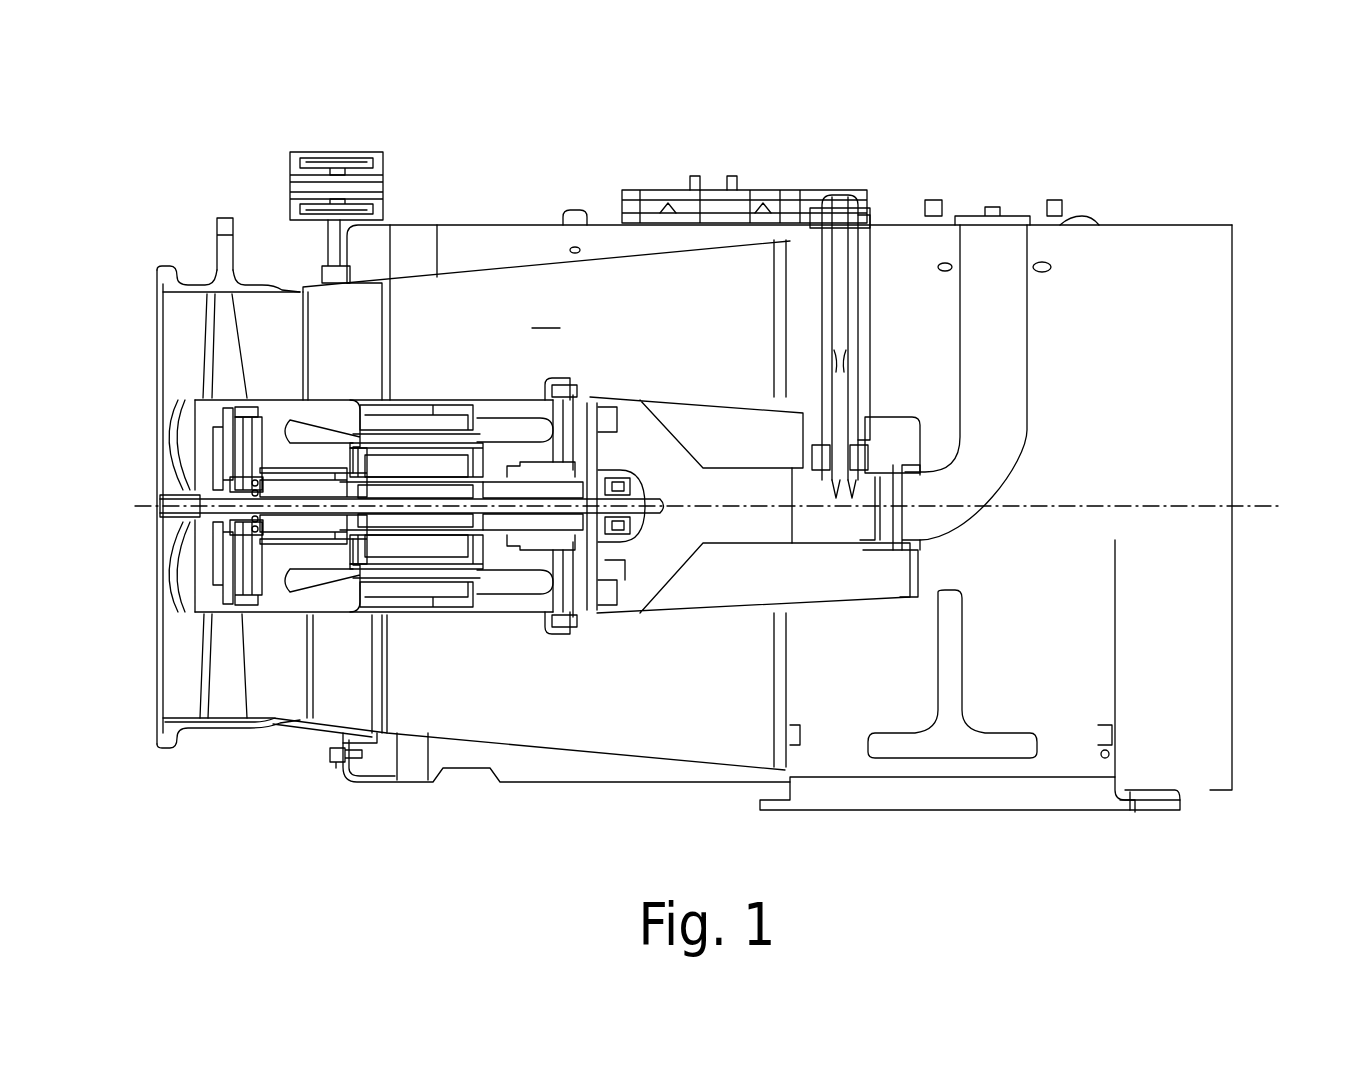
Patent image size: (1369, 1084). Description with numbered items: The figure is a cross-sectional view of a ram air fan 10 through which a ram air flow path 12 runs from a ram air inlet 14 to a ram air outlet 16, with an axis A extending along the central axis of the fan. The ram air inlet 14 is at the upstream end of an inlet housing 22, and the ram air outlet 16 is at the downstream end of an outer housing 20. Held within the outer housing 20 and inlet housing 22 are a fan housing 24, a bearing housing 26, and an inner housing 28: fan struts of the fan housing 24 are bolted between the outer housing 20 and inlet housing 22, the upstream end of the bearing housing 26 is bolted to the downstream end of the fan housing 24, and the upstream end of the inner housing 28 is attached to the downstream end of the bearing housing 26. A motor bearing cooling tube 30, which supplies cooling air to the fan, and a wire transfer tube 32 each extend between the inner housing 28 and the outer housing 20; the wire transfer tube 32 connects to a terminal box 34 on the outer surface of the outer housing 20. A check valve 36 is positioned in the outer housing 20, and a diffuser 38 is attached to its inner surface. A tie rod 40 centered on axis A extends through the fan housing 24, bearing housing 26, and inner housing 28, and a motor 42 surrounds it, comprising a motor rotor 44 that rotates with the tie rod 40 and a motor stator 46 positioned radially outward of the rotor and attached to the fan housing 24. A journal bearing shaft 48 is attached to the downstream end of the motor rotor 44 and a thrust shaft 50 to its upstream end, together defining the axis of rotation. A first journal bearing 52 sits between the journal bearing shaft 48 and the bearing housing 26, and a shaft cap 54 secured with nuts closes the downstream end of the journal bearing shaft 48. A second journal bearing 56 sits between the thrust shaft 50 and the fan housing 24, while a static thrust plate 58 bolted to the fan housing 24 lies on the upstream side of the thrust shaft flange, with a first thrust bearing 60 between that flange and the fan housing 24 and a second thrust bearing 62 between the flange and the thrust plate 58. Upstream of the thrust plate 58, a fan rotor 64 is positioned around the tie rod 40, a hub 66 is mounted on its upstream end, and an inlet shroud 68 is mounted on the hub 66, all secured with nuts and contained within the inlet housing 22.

The ram air fan 10 is at (200, 140).
The ram air flow path 12 is at (697, 461).
The ram air inlet 14 is at (158, 323).
The ram air outlet 16 is at (1232, 313).
The outer housing 20 is at (375, 787).
The inlet housing 22 is at (228, 734).
The fan housing 24 is at (393, 400).
The bearing housing 26 is at (580, 388).
The inner housing 28 is at (700, 400).
The motor bearing cooling tube 30 is at (1028, 332).
The wire transfer tube 32 is at (862, 308).
The terminal box 34 is at (716, 190).
The check valve 36 is at (993, 812).
The diffuser 38 is at (572, 755).
The tie rod 40 is at (653, 507).
The motor 42 is at (426, 614).
The motor rotor 44 is at (440, 552).
The motor stator 46 is at (458, 412).
The journal bearing shaft 48 is at (622, 475).
The thrust shaft 50 is at (270, 423).
The first journal bearing 52 is at (572, 548).
The shaft cap 54 is at (638, 482).
The second journal bearing 56 is at (300, 550).
The thrust plate 58 is at (231, 562).
The first thrust bearing 60 is at (277, 417).
The second thrust bearing 62 is at (235, 445).
The fan rotor 64 is at (220, 652).
The hub 66 is at (214, 436).
The inlet shroud 68 is at (162, 398).
The axis A is at (1270, 506).